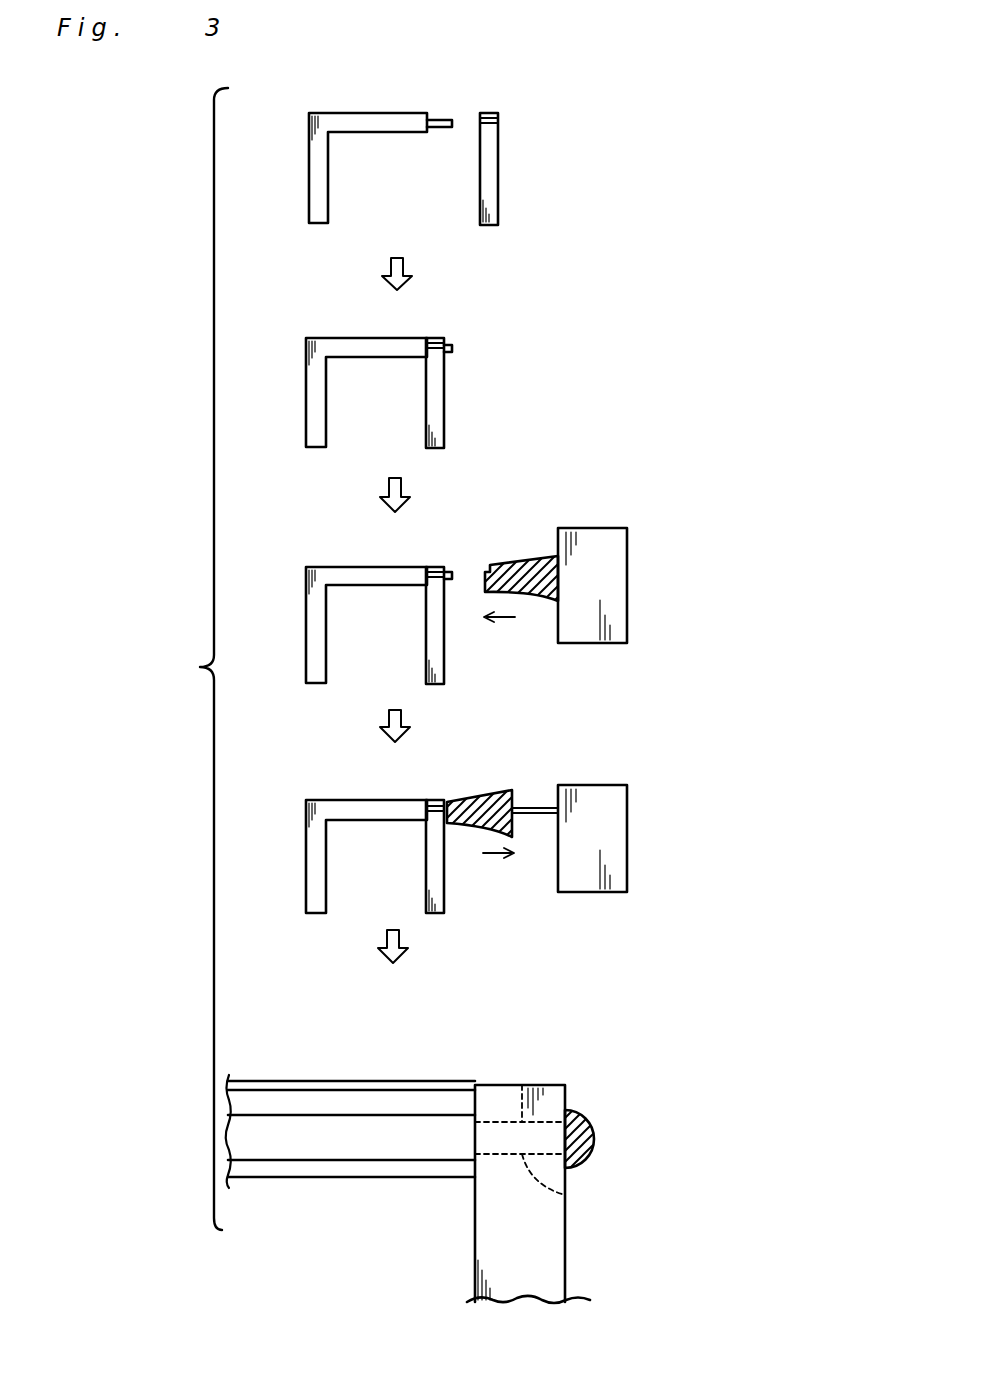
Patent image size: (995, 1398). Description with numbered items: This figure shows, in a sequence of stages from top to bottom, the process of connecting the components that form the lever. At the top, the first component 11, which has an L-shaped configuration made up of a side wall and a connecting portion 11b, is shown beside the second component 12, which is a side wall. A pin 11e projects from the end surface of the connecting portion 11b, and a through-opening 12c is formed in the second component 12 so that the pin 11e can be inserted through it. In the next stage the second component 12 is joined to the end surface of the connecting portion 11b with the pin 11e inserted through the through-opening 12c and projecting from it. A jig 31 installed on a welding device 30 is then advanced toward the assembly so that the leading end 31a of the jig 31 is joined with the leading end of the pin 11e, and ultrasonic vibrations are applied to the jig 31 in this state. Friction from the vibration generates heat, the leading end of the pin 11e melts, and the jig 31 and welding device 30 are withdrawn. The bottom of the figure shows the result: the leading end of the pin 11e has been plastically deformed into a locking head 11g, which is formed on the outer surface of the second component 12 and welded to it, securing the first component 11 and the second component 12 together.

The first component 11 is at (321, 216).
The connecting portion 11b is at (370, 1098).
The pin 11e is at (440, 122).
The locking head 11g is at (589, 1135).
The second component 12 is at (492, 217).
The through-opening 12c is at (490, 113).
The welding device 30 is at (617, 577).
The jig 31 is at (528, 562).
The leading end of jig 31a is at (487, 578).